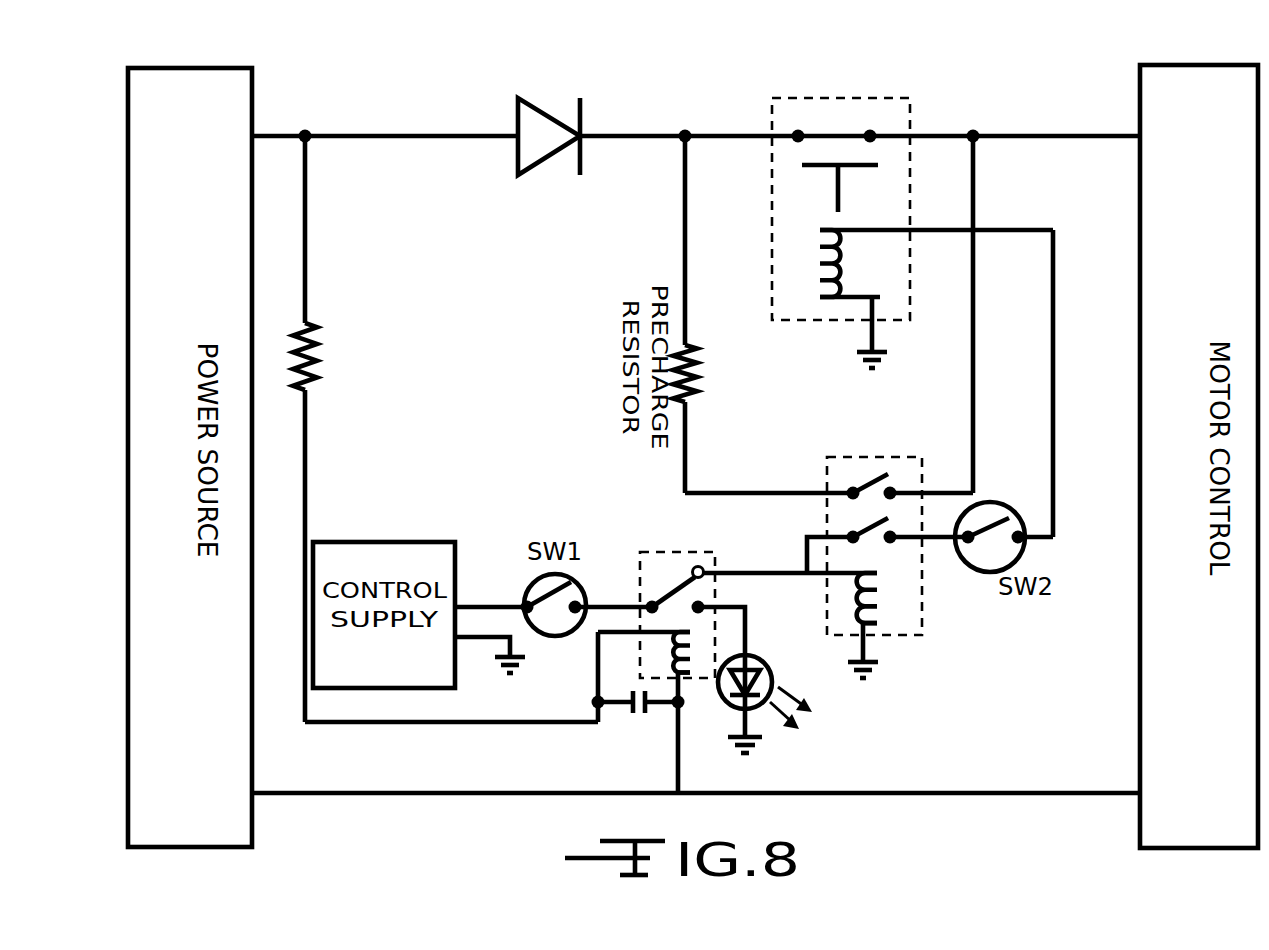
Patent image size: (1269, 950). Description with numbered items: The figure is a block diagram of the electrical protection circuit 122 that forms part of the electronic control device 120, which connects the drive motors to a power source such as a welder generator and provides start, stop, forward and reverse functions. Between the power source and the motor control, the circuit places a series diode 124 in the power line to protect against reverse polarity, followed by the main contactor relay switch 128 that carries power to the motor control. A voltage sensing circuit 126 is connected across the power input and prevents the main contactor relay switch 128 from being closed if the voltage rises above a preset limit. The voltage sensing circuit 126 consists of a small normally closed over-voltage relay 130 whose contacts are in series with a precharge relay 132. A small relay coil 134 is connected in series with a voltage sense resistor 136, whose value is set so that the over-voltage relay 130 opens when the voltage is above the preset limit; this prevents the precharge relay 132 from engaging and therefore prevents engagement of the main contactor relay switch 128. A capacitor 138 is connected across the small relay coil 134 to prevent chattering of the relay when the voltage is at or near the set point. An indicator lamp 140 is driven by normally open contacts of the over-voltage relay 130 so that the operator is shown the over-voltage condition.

The electronic control device 120 is at (668, 58).
The electrical protection circuit 122 is at (985, 95).
The series diode 124 is at (533, 102).
The voltage sensing circuit 126 is at (337, 112).
The main contactor relay switch 128 is at (845, 58).
The over-voltage relay 130 is at (640, 509).
The precharge relay 132 is at (855, 421).
The relay coil 134 is at (686, 676).
The voltage sense resistor 136 is at (362, 361).
The capacitor 138 is at (628, 742).
The indicator lamp 140 is at (843, 730).